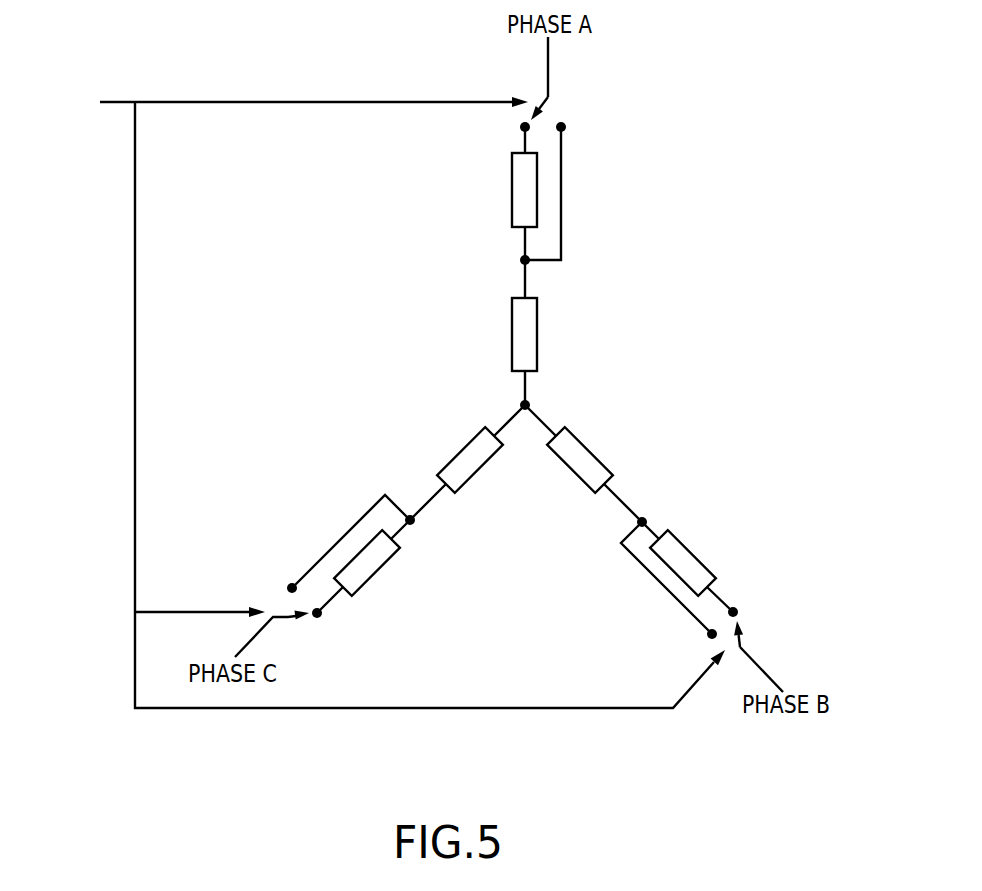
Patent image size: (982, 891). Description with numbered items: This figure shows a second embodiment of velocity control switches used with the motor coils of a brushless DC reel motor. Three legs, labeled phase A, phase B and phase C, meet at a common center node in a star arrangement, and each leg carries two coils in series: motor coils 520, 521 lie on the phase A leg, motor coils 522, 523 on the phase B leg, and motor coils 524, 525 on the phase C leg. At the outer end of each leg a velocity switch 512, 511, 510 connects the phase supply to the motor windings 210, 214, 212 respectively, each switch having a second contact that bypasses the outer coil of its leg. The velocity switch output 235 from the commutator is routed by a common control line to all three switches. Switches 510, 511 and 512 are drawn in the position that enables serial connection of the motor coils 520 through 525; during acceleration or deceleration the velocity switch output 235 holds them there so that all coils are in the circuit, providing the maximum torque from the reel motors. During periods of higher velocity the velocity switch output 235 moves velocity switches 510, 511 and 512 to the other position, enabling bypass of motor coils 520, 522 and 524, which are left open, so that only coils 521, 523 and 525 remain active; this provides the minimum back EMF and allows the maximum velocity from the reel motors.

The velocity switch output 235 is at (206, 80).
The velocity switch 512 is at (548, 100).
The motor winding 210 is at (522, 142).
The motor winding 212 is at (330, 598).
The motor winding 214 is at (713, 592).
The velocity switch 510 is at (281, 618).
The velocity switch 511 is at (741, 645).
The motor coil 520 is at (512, 190).
The motor coil 521 is at (512, 330).
The motor coil 522 is at (712, 573).
The motor coil 523 is at (618, 448).
The motor coil 524 is at (377, 571).
The motor coil 525 is at (488, 458).